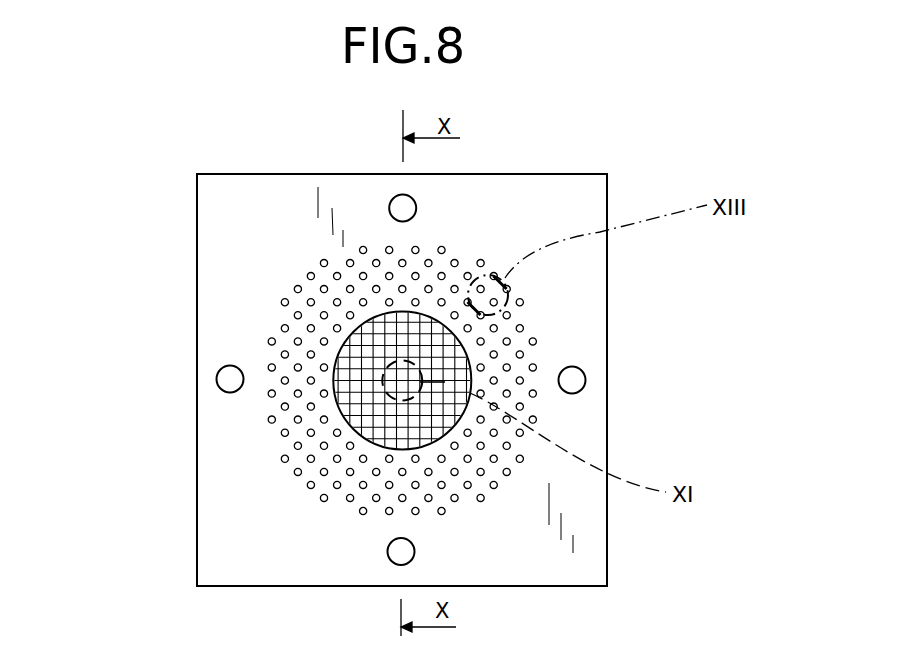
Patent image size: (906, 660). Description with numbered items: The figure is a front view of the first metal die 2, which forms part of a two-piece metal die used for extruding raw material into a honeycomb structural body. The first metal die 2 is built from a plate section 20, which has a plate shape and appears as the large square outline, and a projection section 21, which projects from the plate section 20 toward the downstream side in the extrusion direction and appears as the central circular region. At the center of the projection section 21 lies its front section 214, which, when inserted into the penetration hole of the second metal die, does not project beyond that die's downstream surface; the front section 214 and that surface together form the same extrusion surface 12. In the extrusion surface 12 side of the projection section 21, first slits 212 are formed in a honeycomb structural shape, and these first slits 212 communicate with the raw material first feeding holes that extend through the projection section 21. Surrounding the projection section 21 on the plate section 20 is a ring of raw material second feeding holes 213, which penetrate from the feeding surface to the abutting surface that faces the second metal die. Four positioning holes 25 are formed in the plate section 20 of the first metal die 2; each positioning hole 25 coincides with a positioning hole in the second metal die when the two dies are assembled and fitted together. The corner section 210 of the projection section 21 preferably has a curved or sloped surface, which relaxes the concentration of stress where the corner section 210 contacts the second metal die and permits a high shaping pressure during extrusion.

The first metal die 2 is at (580, 155).
The plate section 20 is at (247, 542).
The projection section 21 is at (457, 373).
The positioning hole 25 is at (416, 208).
The extrusion surface 12 is at (343, 417).
The corner section 210 is at (383, 315).
The first slits 212 is at (360, 342).
The raw material second feeding holes 213 is at (281, 355).
The front section 214 is at (372, 420).